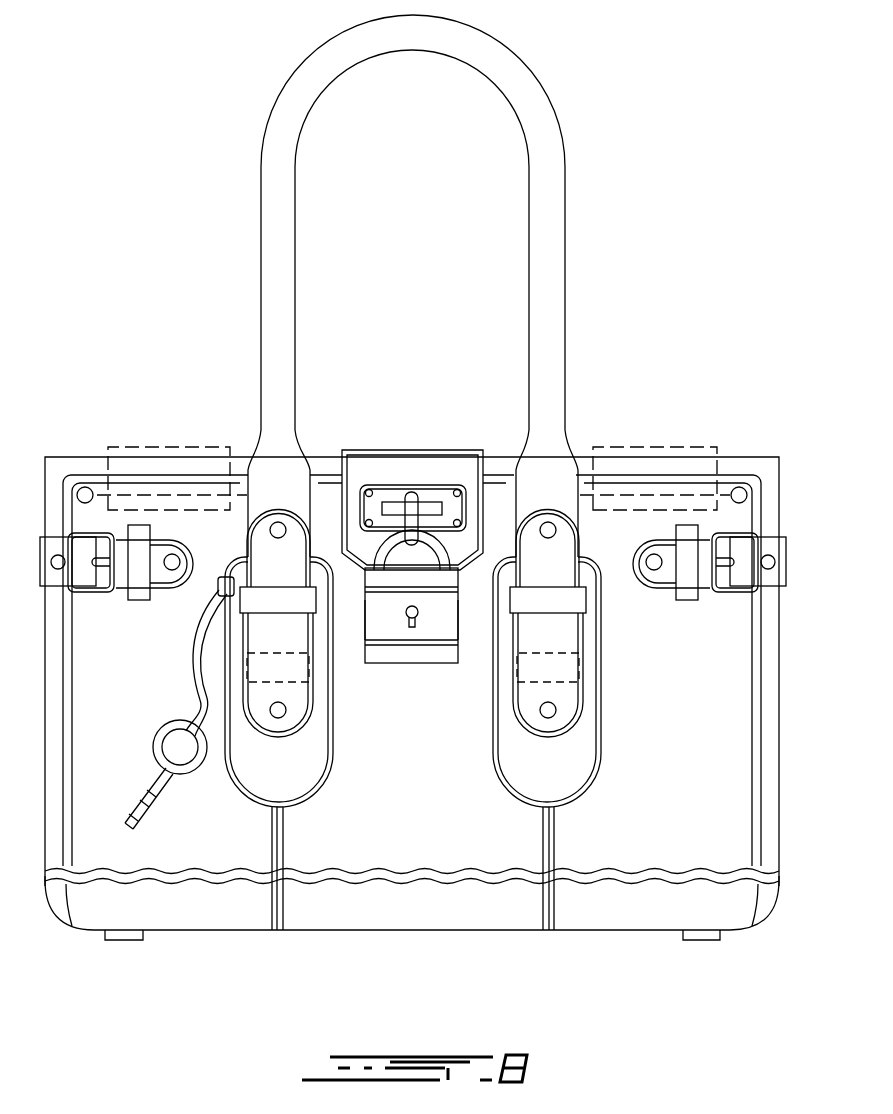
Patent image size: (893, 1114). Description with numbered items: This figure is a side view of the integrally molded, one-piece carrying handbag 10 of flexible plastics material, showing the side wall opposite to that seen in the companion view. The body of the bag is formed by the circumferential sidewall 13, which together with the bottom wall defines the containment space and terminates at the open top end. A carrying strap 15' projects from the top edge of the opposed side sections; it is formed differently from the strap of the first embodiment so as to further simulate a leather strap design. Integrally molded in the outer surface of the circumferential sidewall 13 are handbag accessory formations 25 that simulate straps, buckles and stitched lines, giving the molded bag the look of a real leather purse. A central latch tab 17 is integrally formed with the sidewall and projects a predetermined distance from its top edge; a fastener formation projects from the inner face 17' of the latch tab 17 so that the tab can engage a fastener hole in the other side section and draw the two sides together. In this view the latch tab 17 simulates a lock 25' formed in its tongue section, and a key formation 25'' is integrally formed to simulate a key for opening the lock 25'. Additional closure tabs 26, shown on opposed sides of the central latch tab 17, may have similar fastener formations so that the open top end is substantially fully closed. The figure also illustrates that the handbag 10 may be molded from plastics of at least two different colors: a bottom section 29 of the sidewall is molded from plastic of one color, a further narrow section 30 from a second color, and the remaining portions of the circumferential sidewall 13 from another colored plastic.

The integrally molded, one-piece carrying handbag 10 is at (154, 198).
The circumferential sidewall 13 is at (713, 727).
The carrying strap 15' is at (413, 286).
The latch tab 17 is at (412, 447).
The inner face of the latch tab 17' is at (391, 780).
The handbag accessory formations 25 is at (429, 720).
The lock 25' is at (411, 796).
The key formation 25'' is at (119, 703).
The additional closure tabs 26 is at (168, 447).
The bottom section 29 is at (667, 900).
The narrow section 30 is at (703, 866).